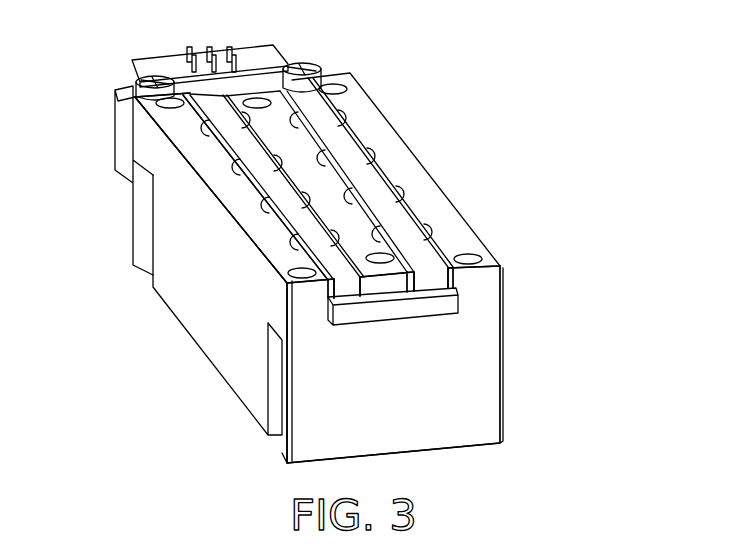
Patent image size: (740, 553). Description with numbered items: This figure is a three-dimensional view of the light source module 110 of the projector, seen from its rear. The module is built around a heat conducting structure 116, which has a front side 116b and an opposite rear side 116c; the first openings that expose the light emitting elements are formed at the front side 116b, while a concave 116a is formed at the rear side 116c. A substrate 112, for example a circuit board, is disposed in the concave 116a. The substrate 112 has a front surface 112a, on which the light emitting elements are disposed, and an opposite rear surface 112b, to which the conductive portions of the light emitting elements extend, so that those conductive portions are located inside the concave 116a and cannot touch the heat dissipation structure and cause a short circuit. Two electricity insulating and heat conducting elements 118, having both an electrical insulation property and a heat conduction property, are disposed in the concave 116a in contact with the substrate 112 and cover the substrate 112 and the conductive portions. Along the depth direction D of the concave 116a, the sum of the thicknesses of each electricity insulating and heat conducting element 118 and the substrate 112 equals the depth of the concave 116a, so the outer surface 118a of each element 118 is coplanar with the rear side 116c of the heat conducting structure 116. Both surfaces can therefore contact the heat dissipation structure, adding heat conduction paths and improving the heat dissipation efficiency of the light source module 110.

The light source module 110 is at (466, 156).
The substrate 112 is at (158, 68).
The front surface 112a is at (397, 327).
The rear surface 112b is at (397, 300).
The heat conducting structure 116 is at (482, 350).
The concave 116a is at (455, 287).
The front side 116b is at (191, 368).
The rear side 116c is at (229, 192).
The electricity insulating and heat conducting element 118 is at (305, 107).
The outer surface 118a is at (331, 141).
The depth direction D is at (513, 268).